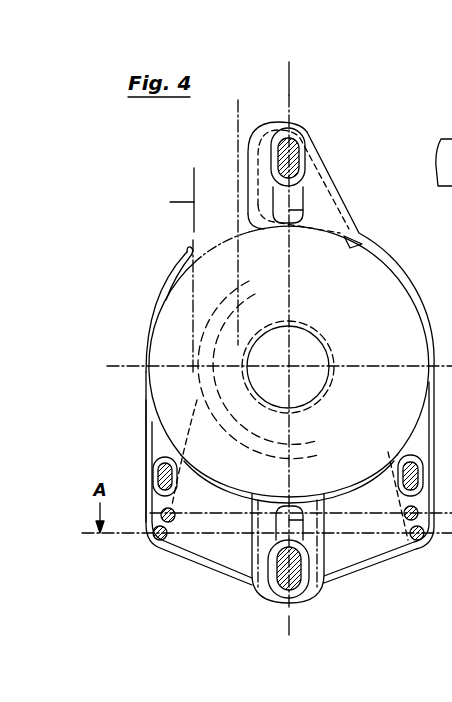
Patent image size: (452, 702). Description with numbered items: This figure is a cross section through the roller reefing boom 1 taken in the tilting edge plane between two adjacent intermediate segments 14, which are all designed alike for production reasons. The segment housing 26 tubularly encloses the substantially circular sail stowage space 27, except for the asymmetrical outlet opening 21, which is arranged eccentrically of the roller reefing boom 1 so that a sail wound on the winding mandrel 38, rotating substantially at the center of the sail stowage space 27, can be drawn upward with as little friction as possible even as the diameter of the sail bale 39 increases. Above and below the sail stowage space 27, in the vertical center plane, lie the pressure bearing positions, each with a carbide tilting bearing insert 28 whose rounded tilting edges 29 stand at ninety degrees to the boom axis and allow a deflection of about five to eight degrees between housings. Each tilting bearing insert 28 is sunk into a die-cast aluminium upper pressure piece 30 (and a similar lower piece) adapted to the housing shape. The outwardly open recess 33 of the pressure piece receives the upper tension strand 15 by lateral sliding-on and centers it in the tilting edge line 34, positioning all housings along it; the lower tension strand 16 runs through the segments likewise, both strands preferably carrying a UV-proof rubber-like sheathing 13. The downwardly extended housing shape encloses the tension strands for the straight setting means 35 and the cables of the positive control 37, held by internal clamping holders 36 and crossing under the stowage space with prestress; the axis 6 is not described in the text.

The roller reefing boom 1 is at (108, 165).
The intermediate segment 14 is at (290, 358).
The axis 6 is at (238, 173).
The sheathing 13 is at (271, 151).
The upper tension strand 15 is at (305, 160).
The lower tension strand 16 is at (299, 558).
The outlet opening 21 is at (214, 234).
The segment housing 26 is at (180, 260).
The sail stowage space 27 is at (178, 305).
The tilting bearing insert 28 is at (297, 197).
The tilting edge 29 is at (301, 208).
The upper pressure piece 30 is at (347, 242).
The recess 33 is at (291, 122).
The tilting edge line 34 is at (284, 67).
The straight setting means 35 is at (138, 435).
The internal clamping holder 36 is at (150, 478).
The positive control 37 is at (150, 505).
The winding mandrel 38 is at (255, 352).
The sail bale 39 is at (205, 397).